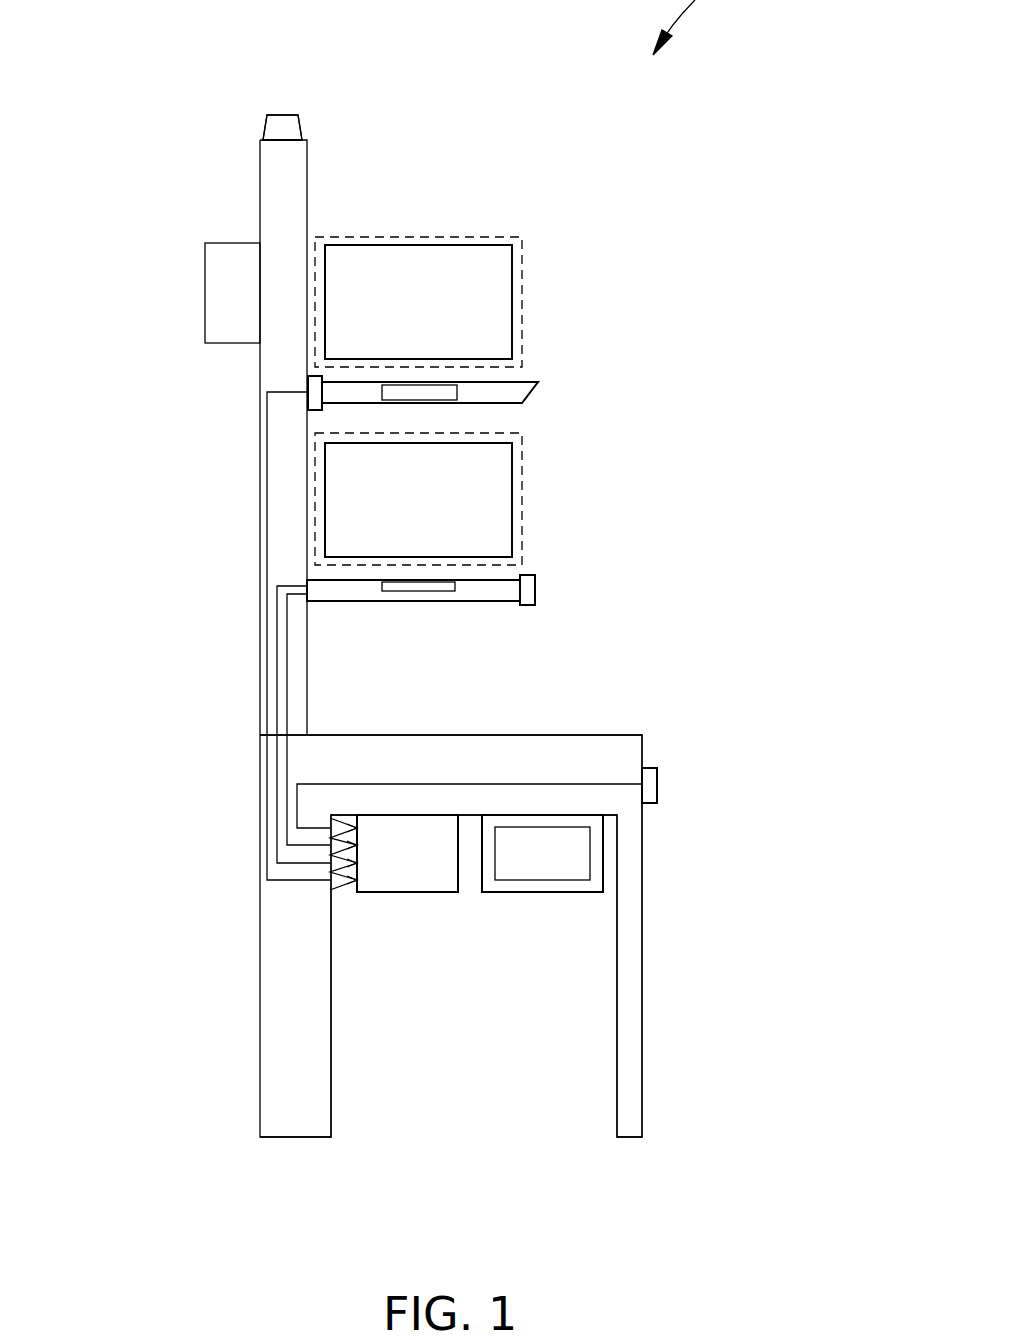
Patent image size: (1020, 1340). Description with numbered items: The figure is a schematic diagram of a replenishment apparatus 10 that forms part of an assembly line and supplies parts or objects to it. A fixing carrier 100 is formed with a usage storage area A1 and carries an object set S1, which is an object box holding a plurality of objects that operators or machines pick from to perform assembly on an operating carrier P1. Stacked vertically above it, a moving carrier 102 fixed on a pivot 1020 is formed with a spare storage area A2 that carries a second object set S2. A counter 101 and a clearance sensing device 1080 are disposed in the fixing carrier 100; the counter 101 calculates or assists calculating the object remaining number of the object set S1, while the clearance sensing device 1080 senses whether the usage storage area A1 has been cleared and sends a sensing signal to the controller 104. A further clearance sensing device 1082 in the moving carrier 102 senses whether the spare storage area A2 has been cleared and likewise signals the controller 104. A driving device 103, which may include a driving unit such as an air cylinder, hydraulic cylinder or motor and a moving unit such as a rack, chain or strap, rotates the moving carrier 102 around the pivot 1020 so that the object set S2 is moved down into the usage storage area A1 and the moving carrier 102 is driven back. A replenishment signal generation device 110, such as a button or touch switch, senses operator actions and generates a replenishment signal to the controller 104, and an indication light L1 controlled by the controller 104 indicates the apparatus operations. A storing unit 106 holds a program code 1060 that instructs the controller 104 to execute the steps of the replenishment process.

The replenishment apparatus 10 is at (216, 216).
The indication light L1 is at (290, 115).
The driving device 103 is at (205, 312).
The spare storage area A2 is at (522, 312).
The object set S2 is at (438, 318).
The pivot 1020 is at (308, 385).
The moving carrier 102 is at (530, 395).
The clearance sensing device 1082 is at (442, 393).
The usage storage area A1 is at (522, 475).
The object set S1 is at (438, 517).
The fixing carrier 100 is at (512, 579).
The clearance sensing device 1080 is at (412, 581).
The counter 101 is at (535, 590).
The operating carrier P1 is at (669, 707).
The replenishment signal generation device 110 is at (657, 787).
The controller 104 is at (432, 869).
The storing unit 106 is at (541, 893).
The program code 1060 is at (573, 869).